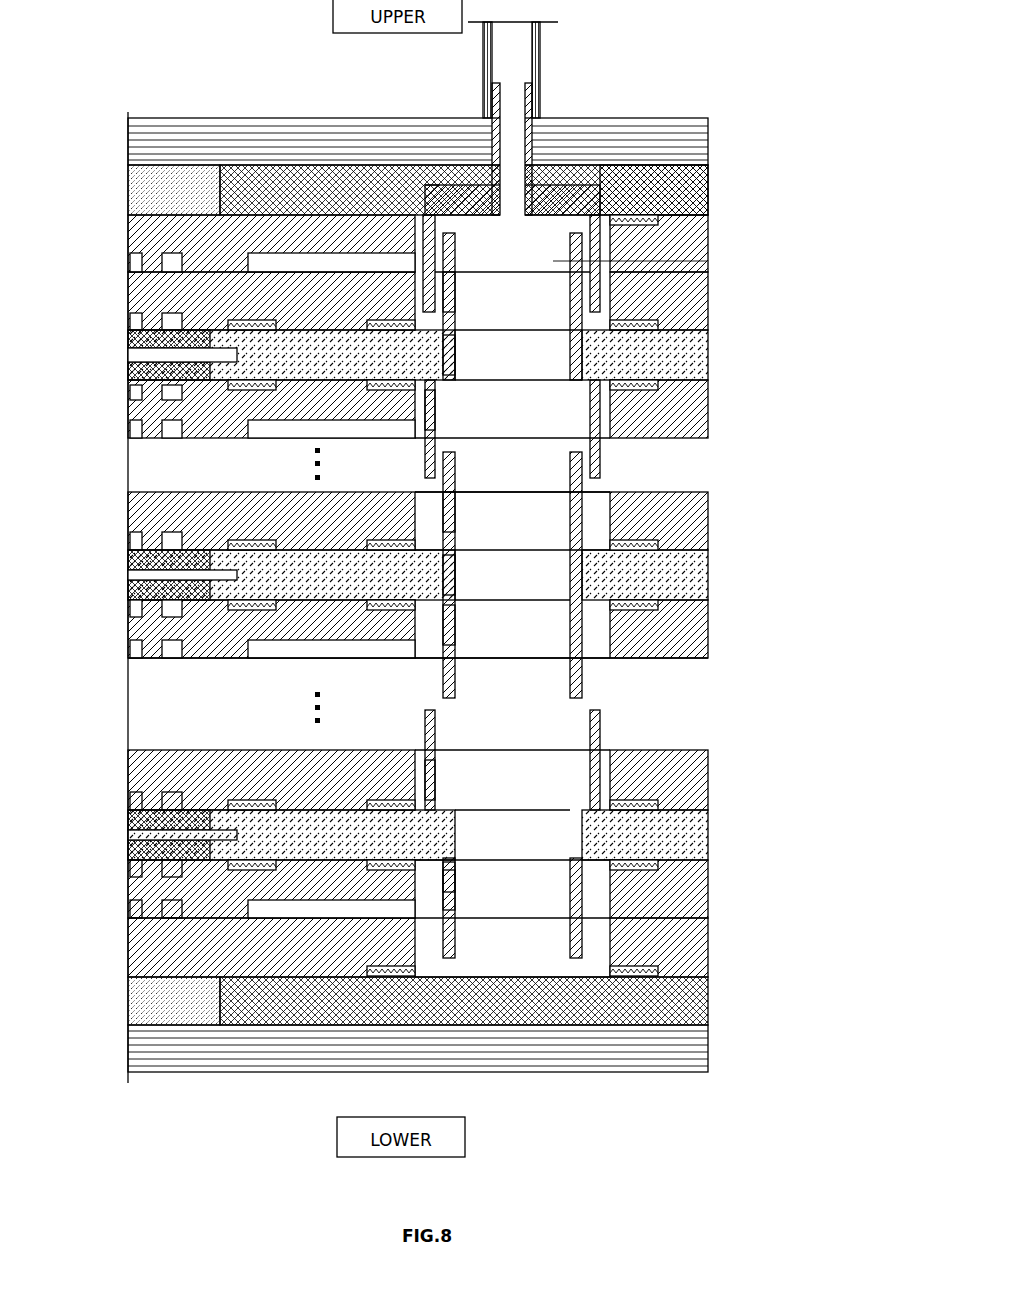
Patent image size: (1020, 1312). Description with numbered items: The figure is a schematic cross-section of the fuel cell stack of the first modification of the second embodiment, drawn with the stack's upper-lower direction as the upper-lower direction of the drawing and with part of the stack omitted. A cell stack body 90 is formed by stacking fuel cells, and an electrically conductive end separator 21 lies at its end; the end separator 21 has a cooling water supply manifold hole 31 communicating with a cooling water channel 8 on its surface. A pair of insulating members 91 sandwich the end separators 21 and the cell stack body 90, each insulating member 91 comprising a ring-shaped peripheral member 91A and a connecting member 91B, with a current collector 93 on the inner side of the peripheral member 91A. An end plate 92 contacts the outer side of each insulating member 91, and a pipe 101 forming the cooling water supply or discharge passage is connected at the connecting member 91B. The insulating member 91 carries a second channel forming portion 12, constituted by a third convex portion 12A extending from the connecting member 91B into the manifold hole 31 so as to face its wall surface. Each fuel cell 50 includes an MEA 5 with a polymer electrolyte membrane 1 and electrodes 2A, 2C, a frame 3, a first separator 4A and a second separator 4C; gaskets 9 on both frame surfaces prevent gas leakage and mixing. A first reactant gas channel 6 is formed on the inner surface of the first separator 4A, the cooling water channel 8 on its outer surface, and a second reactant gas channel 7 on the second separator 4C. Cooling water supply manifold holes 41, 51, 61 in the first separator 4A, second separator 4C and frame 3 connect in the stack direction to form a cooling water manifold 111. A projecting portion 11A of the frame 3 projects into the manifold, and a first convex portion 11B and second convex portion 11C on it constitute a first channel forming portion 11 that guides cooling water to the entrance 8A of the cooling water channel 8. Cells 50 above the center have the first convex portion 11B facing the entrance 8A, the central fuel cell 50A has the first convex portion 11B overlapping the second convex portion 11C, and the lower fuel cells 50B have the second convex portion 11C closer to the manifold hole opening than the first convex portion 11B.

The polymer electrolyte membrane 1 is at (130, 575).
The electrode 2A is at (130, 597).
The electrode 2C is at (130, 555).
The frame 3 is at (710, 575).
The first separator 4A is at (710, 630).
The second separator 4C is at (710, 512).
The MEA 5 is at (66, 544).
The first reactant gas channel 6 is at (130, 610).
The second reactant gas channel 7 is at (130, 540).
The cooling water channel 8 is at (130, 262).
The entrance of the cooling water channel 8A is at (412, 652).
The gasket 9 is at (660, 548).
The first channel forming portion 11 is at (457, 283).
The projecting portion 11A is at (455, 350).
The first convex portion 11B is at (437, 407).
The second convex portion 11C is at (457, 293).
The cooling water manifold 111 is at (513, 488).
The second channel forming portion 12 is at (437, 218).
The third convex portion 12A is at (432, 180).
The end separator 21 is at (708, 222).
The cooling water supply manifold hole 31 is at (708, 261).
The cooling water supply manifold hole 41 is at (478, 642).
The fuel cell 50 is at (710, 424).
The fuel cell 50A is at (710, 650).
The fuel cell 50B is at (710, 909).
The cooling water supply manifold hole 51 is at (557, 518).
The cooling water supply manifold hole 61 is at (535, 588).
The cell stack body 90 is at (710, 351).
The insulating member 91 is at (568, 74).
The peripheral member 91A is at (688, 200).
The connecting member 91B is at (579, 196).
The end plate 92 is at (680, 140).
The current collector 93 is at (166, 180).
The pipe 101 is at (483, 64).